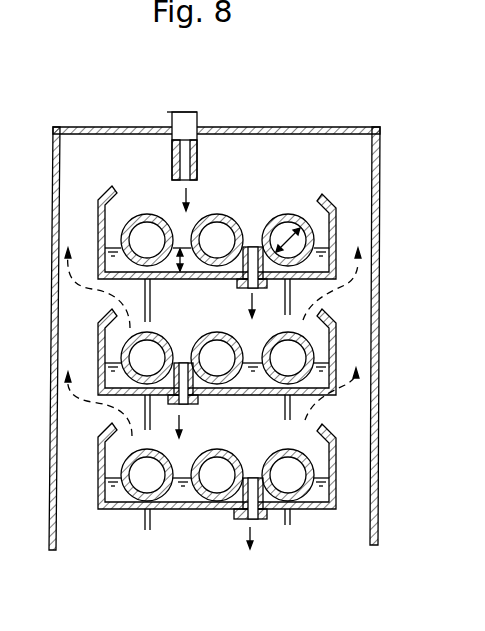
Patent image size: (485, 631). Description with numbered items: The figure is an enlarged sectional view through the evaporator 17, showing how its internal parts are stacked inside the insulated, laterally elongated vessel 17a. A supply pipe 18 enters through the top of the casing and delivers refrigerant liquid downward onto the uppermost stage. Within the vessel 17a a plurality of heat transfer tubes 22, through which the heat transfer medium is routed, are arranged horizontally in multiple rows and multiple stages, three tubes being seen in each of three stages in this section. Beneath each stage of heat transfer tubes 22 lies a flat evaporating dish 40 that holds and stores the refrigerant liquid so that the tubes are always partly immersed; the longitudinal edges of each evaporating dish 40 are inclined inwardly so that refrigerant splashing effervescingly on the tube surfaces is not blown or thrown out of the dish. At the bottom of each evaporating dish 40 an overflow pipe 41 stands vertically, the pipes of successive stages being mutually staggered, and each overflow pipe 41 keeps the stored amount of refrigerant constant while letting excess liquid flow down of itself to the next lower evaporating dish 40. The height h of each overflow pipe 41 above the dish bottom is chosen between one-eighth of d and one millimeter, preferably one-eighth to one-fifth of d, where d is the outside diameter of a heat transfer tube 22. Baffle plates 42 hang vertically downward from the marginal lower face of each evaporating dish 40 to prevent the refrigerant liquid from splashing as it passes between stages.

The evaporator 17 is at (276, 125).
The vessel 17a is at (380, 300).
The liquid supply pipe 18 is at (197, 121).
The heat transfer tube 22 is at (148, 214).
The evaporating dish 40 is at (335, 213).
The overflow pipe 41 is at (254, 246).
The baffle plate 42 is at (151, 298).
The height of overflow pipe h is at (177, 247).
The outside diameter of heat transfer tube d is at (296, 226).